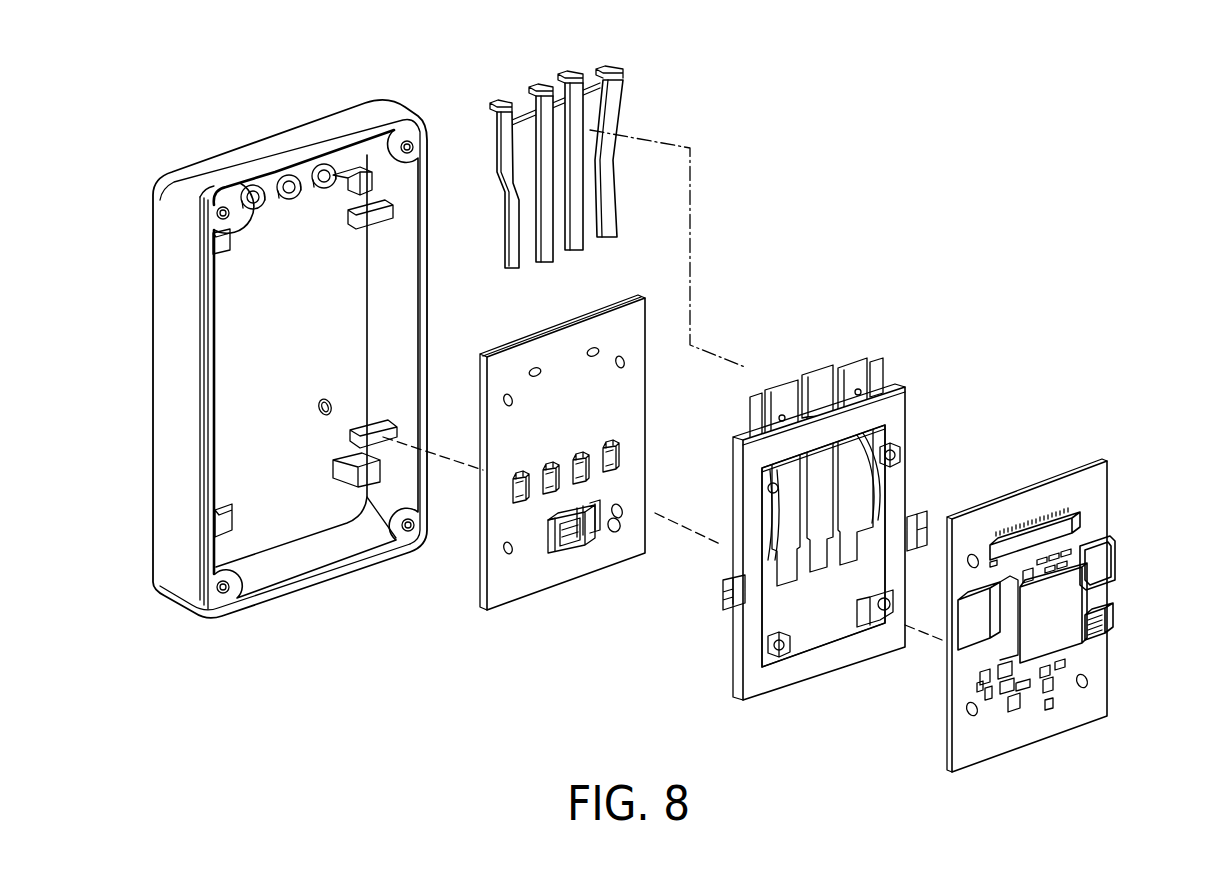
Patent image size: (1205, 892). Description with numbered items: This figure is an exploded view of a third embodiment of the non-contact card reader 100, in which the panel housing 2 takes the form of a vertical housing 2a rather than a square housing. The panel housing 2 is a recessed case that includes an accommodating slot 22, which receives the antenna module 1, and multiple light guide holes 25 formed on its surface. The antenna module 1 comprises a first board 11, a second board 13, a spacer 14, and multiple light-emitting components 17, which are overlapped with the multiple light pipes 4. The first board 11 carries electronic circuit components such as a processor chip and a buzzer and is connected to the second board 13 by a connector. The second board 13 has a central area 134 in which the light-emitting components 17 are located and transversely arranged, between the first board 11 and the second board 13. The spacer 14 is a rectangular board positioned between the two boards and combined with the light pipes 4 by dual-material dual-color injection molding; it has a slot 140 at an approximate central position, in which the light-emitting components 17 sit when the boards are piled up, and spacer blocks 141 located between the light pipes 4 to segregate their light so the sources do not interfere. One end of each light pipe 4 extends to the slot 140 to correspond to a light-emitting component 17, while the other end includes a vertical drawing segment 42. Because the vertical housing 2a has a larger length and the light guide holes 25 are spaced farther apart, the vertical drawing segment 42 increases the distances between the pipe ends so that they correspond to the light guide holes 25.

The non-contact card reader 100 is at (1158, 100).
The antenna module 1 is at (580, 624).
The panel housing 2 is at (133, 212).
The vertical housing 2a is at (185, 582).
The light guide holes 25 is at (324, 164).
The accommodating slot 22 is at (298, 508).
The light pipes 4 is at (612, 237).
The vertical drawing segment 42 is at (583, 127).
The second board 13 is at (585, 557).
The central area 134 is at (578, 422).
The light-emitting components 17 is at (592, 484).
The spacer 14 is at (897, 410).
The spacer blocks 141 is at (848, 453).
The slot 140 is at (813, 620).
The first board 11 is at (1093, 493).